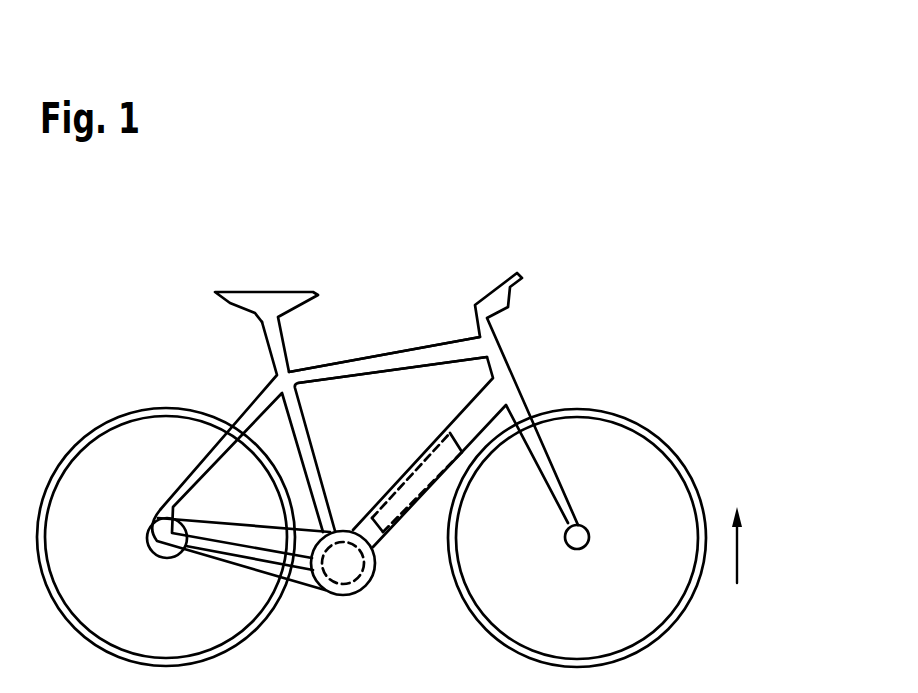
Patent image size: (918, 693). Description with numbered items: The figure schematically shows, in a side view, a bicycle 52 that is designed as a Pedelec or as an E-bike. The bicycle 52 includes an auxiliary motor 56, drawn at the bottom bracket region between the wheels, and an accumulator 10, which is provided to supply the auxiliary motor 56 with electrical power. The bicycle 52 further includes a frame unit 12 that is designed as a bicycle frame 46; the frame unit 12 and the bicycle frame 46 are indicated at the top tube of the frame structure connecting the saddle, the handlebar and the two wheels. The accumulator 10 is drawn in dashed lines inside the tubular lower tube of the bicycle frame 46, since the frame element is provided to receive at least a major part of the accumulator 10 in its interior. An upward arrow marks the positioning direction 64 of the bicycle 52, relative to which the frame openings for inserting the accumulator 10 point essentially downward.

The accumulator 10 is at (402, 513).
The frame unit 12 is at (442, 353).
The bicycle frame 46 is at (352, 370).
The bicycle 52 is at (396, 264).
The auxiliary motor 56 is at (353, 598).
The positioning direction 64 is at (737, 552).